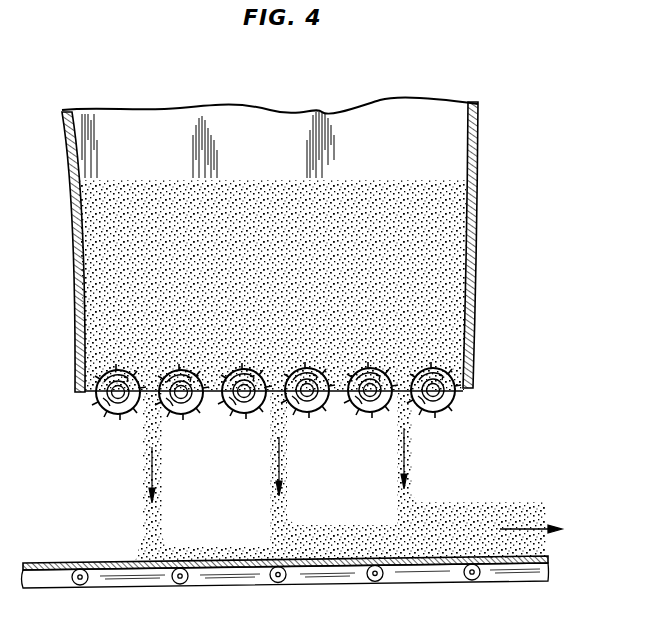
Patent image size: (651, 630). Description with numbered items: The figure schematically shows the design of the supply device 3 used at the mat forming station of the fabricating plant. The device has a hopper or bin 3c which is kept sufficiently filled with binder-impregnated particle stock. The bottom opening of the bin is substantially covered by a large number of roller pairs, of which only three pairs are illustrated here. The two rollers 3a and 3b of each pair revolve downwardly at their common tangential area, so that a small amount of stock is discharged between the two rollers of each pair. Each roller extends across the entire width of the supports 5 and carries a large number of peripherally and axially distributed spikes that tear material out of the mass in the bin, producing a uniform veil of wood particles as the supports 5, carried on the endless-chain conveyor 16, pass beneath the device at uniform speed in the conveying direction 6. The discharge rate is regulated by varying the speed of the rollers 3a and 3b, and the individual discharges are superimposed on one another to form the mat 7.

The particle dispensing device 3 is at (468, 290).
The hopper or bin 3c is at (470, 160).
The roller 3a is at (104, 416).
The roller 3b is at (186, 414).
The sheet-metal supports 5 is at (93, 563).
The conveyor 16 is at (120, 582).
The mat 7 is at (487, 510).
The conveying direction 6 is at (530, 527).